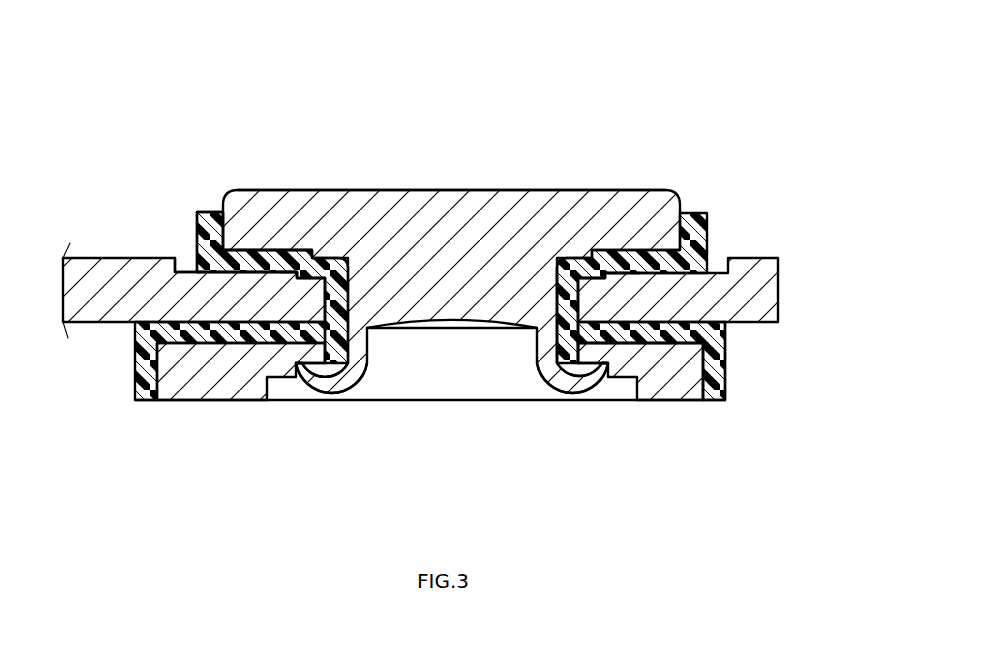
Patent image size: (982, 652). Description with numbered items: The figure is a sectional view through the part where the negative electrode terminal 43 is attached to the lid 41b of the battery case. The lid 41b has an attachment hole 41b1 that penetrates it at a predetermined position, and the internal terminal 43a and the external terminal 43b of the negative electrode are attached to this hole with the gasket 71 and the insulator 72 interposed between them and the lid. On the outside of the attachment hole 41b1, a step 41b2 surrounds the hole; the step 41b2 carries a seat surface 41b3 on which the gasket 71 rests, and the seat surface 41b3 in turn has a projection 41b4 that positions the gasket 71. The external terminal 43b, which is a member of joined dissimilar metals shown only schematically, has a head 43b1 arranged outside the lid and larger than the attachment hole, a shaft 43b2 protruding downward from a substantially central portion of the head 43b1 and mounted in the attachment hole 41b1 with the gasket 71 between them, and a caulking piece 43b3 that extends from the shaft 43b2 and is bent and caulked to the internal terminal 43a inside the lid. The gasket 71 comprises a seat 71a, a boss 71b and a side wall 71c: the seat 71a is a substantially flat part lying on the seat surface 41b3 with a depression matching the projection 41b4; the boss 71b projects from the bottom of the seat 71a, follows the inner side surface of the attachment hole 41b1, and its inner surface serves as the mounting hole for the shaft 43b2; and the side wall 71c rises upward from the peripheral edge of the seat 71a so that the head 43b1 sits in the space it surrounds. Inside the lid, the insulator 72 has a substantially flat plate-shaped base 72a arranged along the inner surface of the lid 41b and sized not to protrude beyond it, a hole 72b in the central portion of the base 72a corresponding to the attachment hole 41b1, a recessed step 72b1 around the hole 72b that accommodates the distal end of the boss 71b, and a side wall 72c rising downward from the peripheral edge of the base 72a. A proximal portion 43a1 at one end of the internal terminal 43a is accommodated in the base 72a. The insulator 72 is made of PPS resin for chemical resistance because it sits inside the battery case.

The negative electrode terminal 43 is at (618, 105).
The external terminal 43b is at (658, 188).
The head 43b1 is at (520, 190).
The shaft 43b2 is at (577, 394).
The caulking piece 43b3 is at (328, 393).
The internal terminal 43a is at (247, 417).
The proximal portion 43a1 is at (195, 405).
The lid 41b is at (117, 233).
The attachment hole 41b1 is at (343, 291).
The step 41b2 is at (178, 253).
The seat surface 41b3 is at (687, 250).
The projection 41b4 is at (306, 250).
The gasket 71 is at (715, 213).
The seat 71a is at (290, 248).
The boss 71b is at (557, 295).
The side wall 71c is at (241, 222).
The insulator 72 is at (733, 357).
The base 72a is at (657, 345).
The hole 72b is at (535, 350).
The step 72b1 is at (363, 372).
The side wall 72c is at (705, 383).